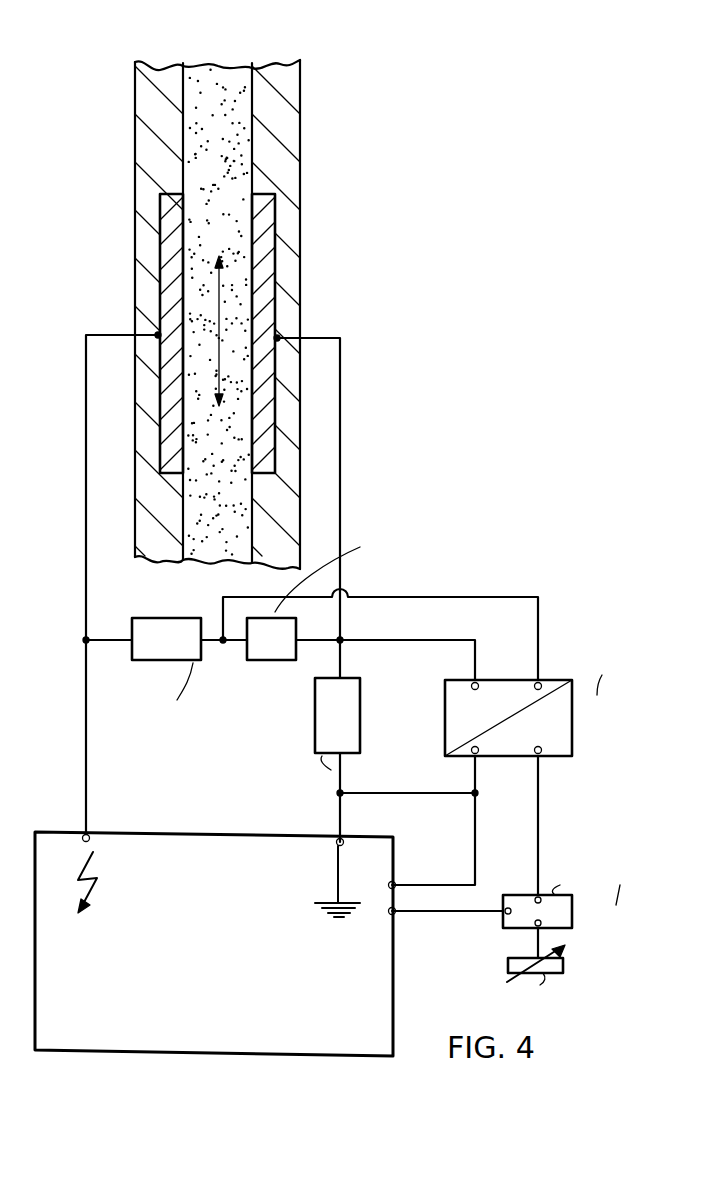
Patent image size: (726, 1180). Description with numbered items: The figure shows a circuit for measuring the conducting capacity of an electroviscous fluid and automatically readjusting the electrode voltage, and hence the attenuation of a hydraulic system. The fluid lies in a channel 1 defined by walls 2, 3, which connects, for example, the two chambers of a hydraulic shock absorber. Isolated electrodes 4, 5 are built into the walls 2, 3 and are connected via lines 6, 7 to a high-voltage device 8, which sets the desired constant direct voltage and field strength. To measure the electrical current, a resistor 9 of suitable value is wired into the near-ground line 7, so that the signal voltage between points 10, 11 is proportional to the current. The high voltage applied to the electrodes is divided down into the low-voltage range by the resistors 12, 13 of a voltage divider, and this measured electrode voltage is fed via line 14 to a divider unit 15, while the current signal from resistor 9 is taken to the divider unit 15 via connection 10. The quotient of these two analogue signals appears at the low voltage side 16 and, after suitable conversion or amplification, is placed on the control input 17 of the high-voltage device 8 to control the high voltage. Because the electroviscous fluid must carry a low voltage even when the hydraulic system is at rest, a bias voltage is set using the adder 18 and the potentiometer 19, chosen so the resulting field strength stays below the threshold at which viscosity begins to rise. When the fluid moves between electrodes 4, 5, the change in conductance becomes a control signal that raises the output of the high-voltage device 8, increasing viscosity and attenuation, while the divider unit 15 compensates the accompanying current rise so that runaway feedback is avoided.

The channel 1 is at (213, 72).
The wall 2 is at (160, 68).
The wall 3 is at (263, 80).
The electrode 4 is at (160, 208).
The electrode 5 is at (275, 207).
The line 6 is at (86, 428).
The line 7 is at (342, 432).
The high-voltage device 8 is at (215, 845).
The resistor 9 is at (316, 737).
The connection 10 is at (425, 640).
The point 11 is at (400, 777).
The resistor of the voltage divider 12 is at (167, 653).
The resistor of the voltage divider 13 is at (272, 652).
The line 14 is at (430, 598).
The divider unit 15 is at (562, 711).
The low voltage side 16 is at (538, 823).
The control input 17 is at (415, 912).
The adder 18 is at (572, 908).
The potentiometer 19 is at (563, 966).